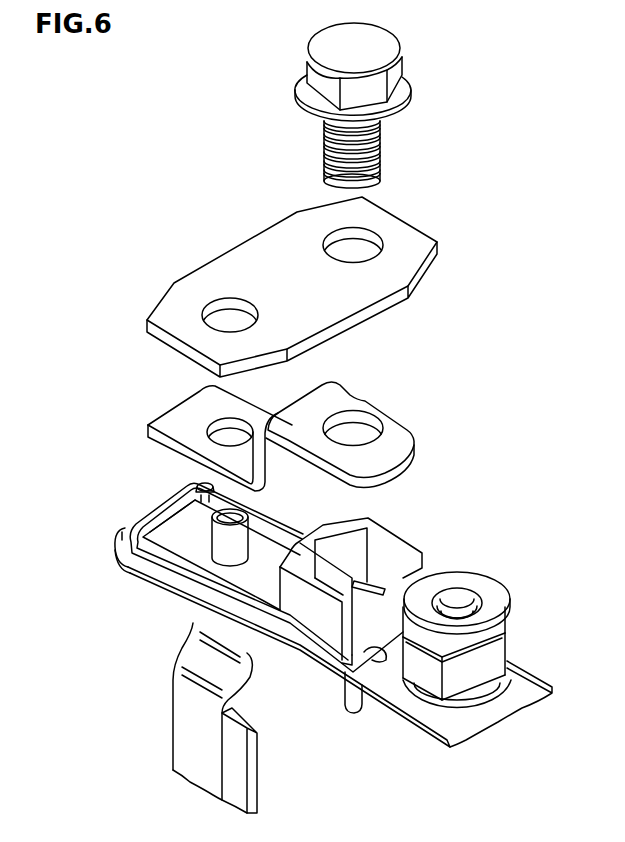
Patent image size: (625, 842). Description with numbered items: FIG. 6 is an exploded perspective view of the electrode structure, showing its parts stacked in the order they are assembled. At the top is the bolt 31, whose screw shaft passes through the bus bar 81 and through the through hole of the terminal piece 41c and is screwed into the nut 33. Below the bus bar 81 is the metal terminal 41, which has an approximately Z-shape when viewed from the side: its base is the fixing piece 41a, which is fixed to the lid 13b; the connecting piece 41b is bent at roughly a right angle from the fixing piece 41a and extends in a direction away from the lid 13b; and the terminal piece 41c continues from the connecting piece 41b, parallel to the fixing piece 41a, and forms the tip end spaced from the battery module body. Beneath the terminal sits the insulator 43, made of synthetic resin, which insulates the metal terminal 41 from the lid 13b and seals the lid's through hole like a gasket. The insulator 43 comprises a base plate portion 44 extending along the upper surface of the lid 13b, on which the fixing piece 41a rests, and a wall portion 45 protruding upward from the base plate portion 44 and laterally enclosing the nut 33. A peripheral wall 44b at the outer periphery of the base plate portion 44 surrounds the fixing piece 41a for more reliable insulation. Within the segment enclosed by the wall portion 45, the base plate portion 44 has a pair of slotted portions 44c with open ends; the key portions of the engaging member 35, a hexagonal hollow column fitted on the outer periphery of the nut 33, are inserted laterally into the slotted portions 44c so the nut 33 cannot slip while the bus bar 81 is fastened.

The bolt 31 is at (368, 53).
The bus bar 81 is at (263, 250).
The metal terminal 41 is at (261, 412).
The fixing piece 41a is at (183, 415).
The connecting piece 41b is at (255, 458).
The terminal piece 41c is at (397, 423).
The base plate portion 44 is at (277, 622).
The peripheral wall 44b is at (163, 505).
The slotted portion 44c is at (383, 600).
The lid 13b is at (115, 538).
The insulator 43 is at (160, 560).
The wall portion 45 is at (307, 603).
The nut 33 is at (497, 595).
The engaging member 35 is at (503, 650).